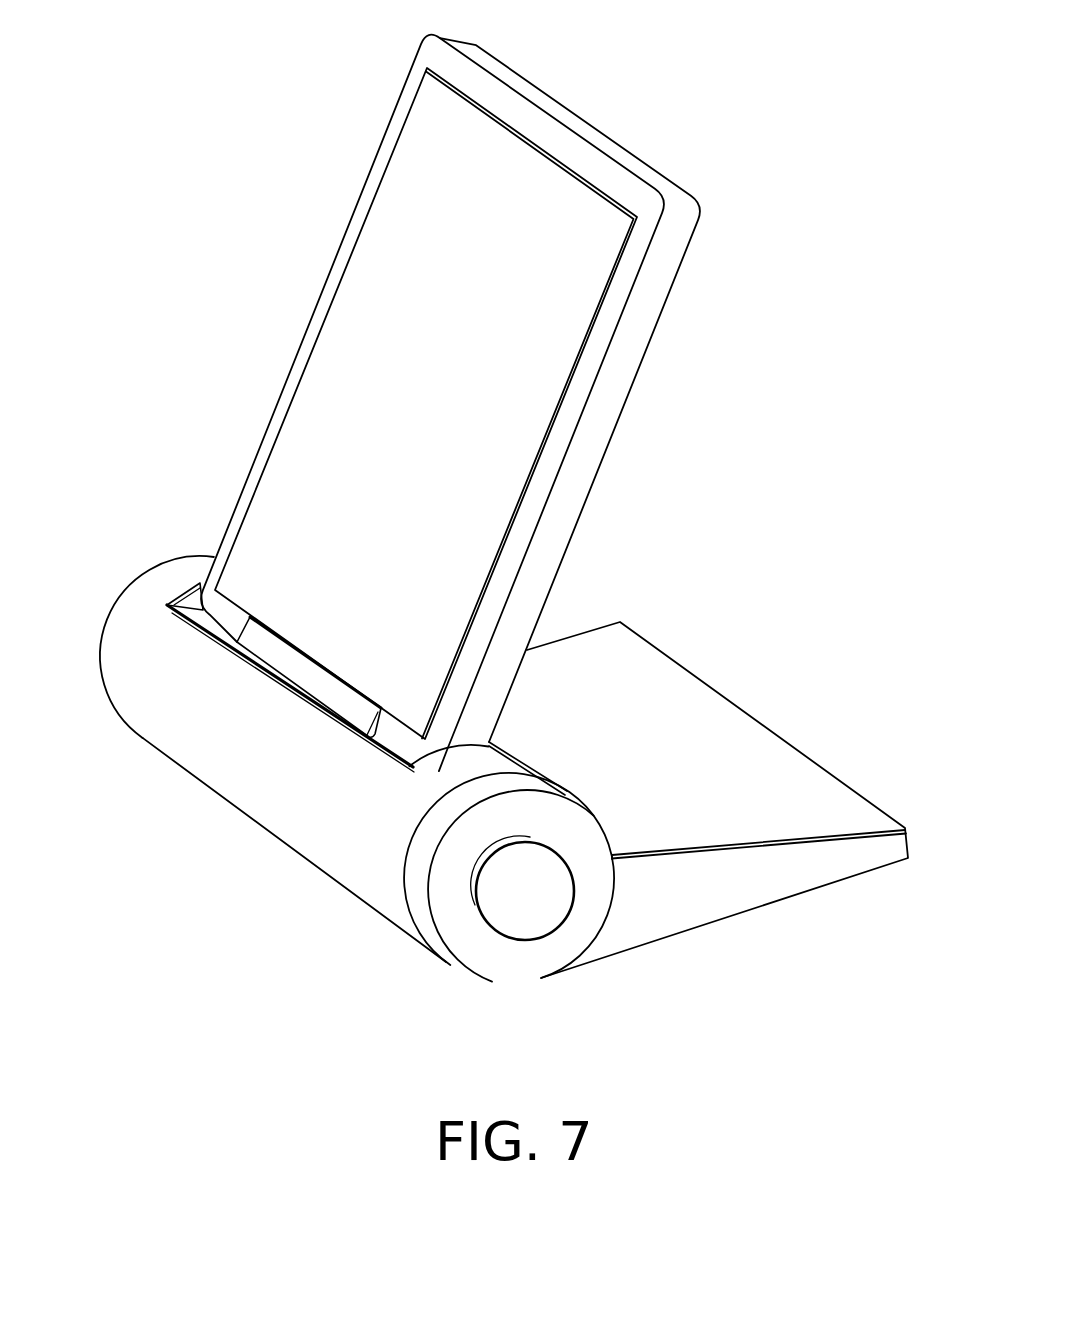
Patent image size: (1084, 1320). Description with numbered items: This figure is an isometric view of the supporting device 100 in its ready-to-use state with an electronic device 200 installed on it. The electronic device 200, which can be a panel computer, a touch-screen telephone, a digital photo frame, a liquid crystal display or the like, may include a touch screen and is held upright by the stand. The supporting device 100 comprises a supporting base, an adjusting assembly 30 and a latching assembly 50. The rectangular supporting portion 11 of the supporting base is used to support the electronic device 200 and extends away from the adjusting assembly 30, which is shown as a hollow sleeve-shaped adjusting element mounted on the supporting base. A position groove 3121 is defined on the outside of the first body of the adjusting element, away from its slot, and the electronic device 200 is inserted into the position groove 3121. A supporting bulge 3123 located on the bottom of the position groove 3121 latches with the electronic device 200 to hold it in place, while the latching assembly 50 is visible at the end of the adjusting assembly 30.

The supporting device 100 is at (501, 799).
The supporting portion 11 is at (782, 790).
The adjusting assembly 30 is at (365, 877).
The latching assembly 50 is at (515, 908).
The electronic device 200 is at (393, 132).
The position groove 3121 is at (385, 757).
The supporting bulge 3123 is at (332, 697).